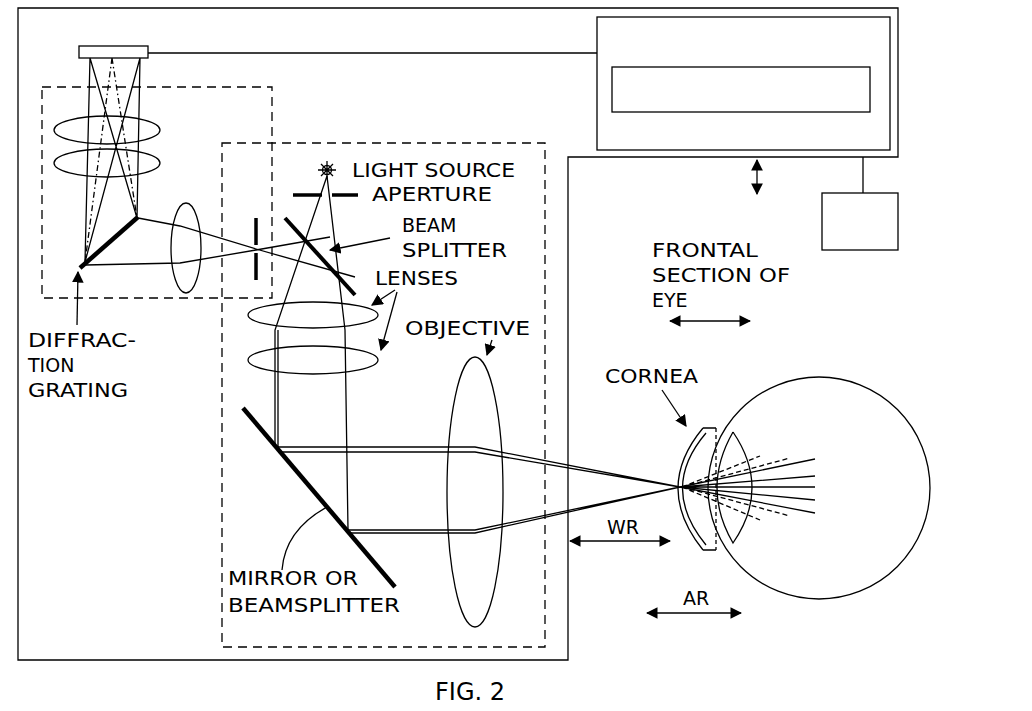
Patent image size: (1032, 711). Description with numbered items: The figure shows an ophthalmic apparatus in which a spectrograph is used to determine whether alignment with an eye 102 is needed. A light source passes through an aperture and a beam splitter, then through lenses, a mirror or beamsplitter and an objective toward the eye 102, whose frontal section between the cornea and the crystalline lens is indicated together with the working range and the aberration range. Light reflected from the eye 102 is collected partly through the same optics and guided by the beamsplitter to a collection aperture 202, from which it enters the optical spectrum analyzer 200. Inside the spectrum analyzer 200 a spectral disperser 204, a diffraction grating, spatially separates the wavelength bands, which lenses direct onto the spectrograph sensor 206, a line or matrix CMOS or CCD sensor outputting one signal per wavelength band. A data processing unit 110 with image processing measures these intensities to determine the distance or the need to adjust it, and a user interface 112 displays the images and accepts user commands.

The data processing unit 110 is at (641, 45).
The user interface 112 is at (877, 192).
The eye 102 is at (834, 574).
The optical spectrum analyzer 200 is at (246, 111).
The spectral disperser 204 is at (140, 216).
The collection aperture 202 is at (250, 280).
The spectrograph sensor 206 is at (78, 52).